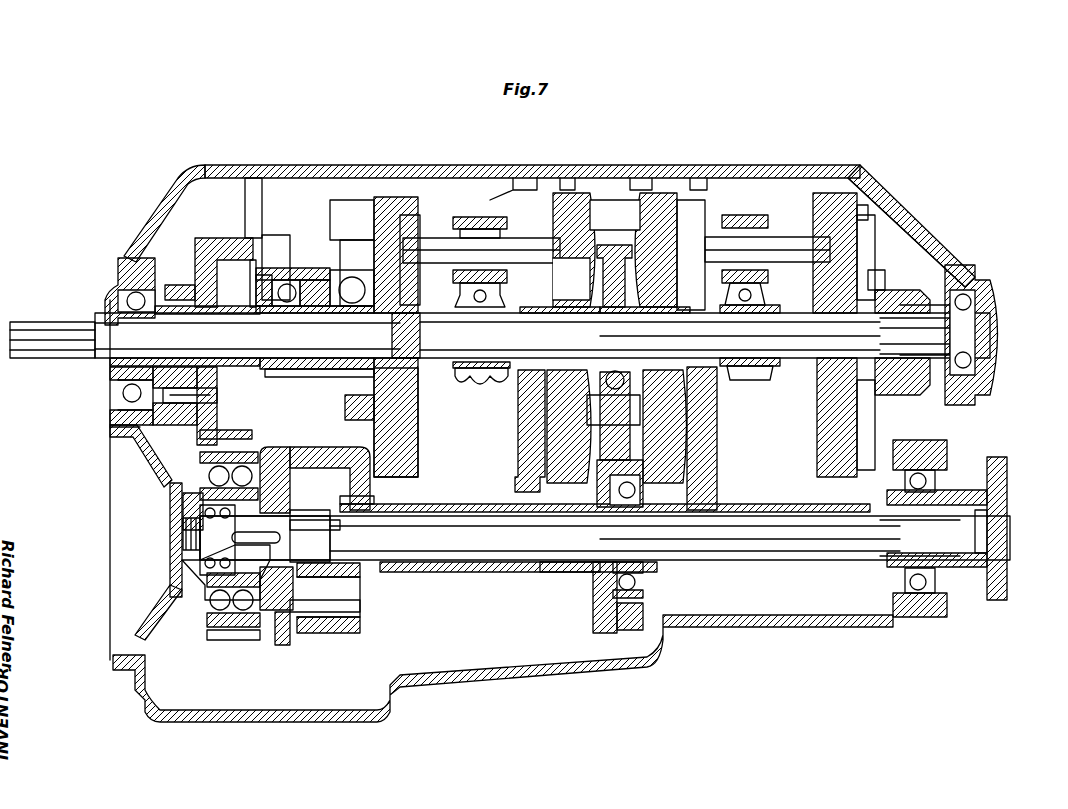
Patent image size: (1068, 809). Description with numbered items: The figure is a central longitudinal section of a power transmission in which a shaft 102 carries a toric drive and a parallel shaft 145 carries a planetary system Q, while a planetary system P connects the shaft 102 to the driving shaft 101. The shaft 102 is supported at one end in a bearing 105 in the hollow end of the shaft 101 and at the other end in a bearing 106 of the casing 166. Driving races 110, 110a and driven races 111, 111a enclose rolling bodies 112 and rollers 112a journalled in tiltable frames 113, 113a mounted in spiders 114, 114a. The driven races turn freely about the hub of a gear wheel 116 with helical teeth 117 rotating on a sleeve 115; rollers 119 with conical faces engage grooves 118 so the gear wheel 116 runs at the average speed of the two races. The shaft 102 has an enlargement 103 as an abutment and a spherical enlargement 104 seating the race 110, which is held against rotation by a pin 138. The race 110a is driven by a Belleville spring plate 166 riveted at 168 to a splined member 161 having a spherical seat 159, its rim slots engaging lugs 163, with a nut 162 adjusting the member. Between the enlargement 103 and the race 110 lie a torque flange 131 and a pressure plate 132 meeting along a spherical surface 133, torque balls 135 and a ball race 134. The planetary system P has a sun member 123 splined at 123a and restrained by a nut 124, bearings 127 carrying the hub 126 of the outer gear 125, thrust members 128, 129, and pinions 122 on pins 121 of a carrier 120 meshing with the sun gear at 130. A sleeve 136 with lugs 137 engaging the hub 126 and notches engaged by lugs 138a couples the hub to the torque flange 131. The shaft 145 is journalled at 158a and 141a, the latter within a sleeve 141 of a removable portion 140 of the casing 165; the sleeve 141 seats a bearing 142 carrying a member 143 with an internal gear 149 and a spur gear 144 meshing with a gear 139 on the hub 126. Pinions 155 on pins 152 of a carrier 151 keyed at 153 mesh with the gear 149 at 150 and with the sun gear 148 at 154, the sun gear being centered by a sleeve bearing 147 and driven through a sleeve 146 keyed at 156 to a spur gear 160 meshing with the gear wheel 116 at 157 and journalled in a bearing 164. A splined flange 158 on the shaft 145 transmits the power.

The driving shaft 101 is at (22, 340).
The shaft 102 is at (478, 385).
The enlargement 103 is at (330, 150).
The enlargement 104 is at (405, 338).
The bearing 105 is at (100, 305).
The bearing 106 is at (995, 320).
The driving race 110 is at (405, 197).
The driving race 110a is at (838, 193).
The driven race 111 is at (565, 195).
The driven race 111a is at (660, 230).
The rolling bodies 112 is at (418, 215).
The rollers 112a is at (795, 237).
The frames 113 is at (458, 217).
The adjustable frames 113a is at (745, 215).
The spider 114 is at (522, 180).
The spider 114a is at (690, 200).
The sleeve 115 is at (560, 314).
The gear wheel 116 is at (615, 314).
The teeth 117 is at (610, 245).
The inclined walls or grooves 118 is at (638, 200).
The rollers 119 is at (610, 385).
The carrier 120 is at (125, 378).
The pins 121 is at (110, 430).
The pinions 122 is at (175, 408).
The sun member 123 is at (195, 300).
The splined relation 123a is at (340, 340).
The nut 124 is at (172, 290).
The outer gear 125 is at (185, 290).
The hub 126 is at (282, 235).
The roller or needle bearings 127 is at (270, 280).
The thrust member 128 is at (228, 238).
The thrust member 129 is at (287, 270).
The sun gear 130 is at (160, 400).
The torque flange 131 is at (336, 280).
The pressure plate 132 is at (285, 318).
The spherical bearing surface 133 is at (340, 314).
The ball race 134 is at (346, 272).
The torque balls 135 is at (360, 240).
The sleeve 136 is at (345, 200).
The lugs 137 is at (248, 268).
The pin 138 is at (390, 390).
The lugs 138a is at (360, 410).
The gear 139 is at (200, 440).
The removable portion 140 is at (165, 615).
The sleeve 141 is at (175, 575).
The bearing 141a is at (195, 540).
The bearing 142 is at (170, 495).
The member 143 is at (265, 640).
The spur gear 144 is at (215, 640).
The driven shaft 145 is at (460, 575).
The sleeve 146 is at (458, 545).
The sleeve bearing 147 is at (340, 522).
The sun gear 148 is at (370, 505).
The internal gear wheel 149 is at (326, 668).
The mesh 150 is at (360, 620).
The carrier 151 is at (265, 610).
The pins 152 is at (278, 612).
The key 153 is at (325, 540).
The mesh with sun gear 154 is at (340, 578).
The pinions 155 is at (300, 650).
The key 156 is at (556, 575).
The mesh 157 is at (605, 440).
The flange 158 is at (1005, 478).
The bearing 158a is at (945, 480).
The spherical seating surface 159 is at (850, 380).
The spur gear 160 is at (605, 590).
The member 161 is at (905, 260).
The nut 162 is at (910, 292).
The lugs 163 is at (862, 215).
The bearing 164 is at (643, 490).
The casing 165 is at (252, 178).
The spring plate 166 is at (868, 215).
The rivets 168 is at (882, 270).
The planetary system P is at (206, 185).
The planetary system Q is at (345, 695).